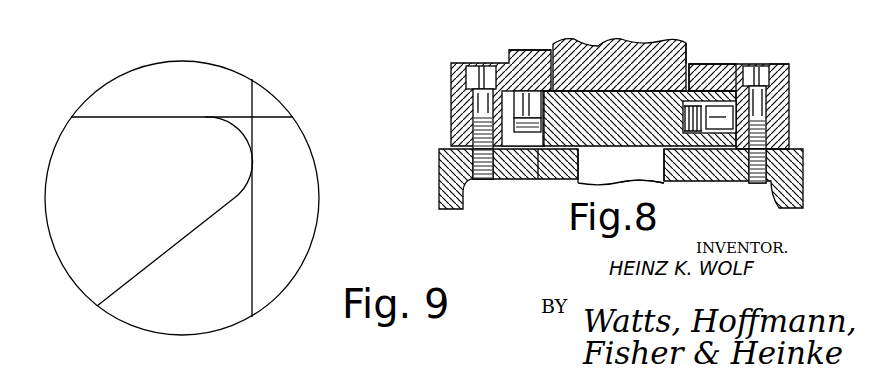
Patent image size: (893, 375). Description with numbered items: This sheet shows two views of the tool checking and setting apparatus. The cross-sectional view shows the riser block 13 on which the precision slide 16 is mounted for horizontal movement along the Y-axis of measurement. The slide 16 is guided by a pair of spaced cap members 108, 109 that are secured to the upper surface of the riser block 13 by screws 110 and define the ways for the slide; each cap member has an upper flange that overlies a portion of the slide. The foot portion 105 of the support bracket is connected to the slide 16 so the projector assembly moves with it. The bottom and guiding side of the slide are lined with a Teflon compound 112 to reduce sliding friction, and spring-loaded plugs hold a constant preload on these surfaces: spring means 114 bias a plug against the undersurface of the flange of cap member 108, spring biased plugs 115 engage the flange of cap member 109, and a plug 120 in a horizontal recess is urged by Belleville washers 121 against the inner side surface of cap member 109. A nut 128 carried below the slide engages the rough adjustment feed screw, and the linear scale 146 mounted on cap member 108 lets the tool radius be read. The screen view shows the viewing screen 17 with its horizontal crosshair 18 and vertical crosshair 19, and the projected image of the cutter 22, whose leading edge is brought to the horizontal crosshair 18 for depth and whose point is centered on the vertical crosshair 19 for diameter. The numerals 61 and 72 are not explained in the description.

In FIG. 8, the riser block 13 is at (431, 160).
In FIG. 8, the precision slide 16 is at (598, 35).
In FIG. 9, the viewing screen 17 is at (227, 74).
In FIG. 9, the horizontal crosshair 18 is at (262, 109).
In FIG. 9, the vertical crosshair 19 is at (244, 275).
In FIG. 9, the cutter 22 is at (88, 247).
In FIG. 8, the member 61 is at (553, 0).
In FIG. 8, the member 72 is at (465, 14).
In FIG. 8, the foot portion 105 is at (678, 56).
In FIG. 8, the cap member 108 is at (443, 75).
In FIG. 8, the cap member 109 is at (781, 99).
In FIG. 8, the screws 110 is at (778, 59).
In FIG. 8, the Teflon compound 112 is at (530, 176).
In FIG. 8, the spring means 114 is at (550, 121).
In FIG. 8, the spring biased plugs 115 is at (521, 42).
In FIG. 8, the plug 120 is at (713, 103).
In FIG. 8, the Belleville washers 121 is at (682, 93).
In FIG. 8, the nut 128 is at (656, 176).
In FIG. 8, the linear scale 146 is at (521, 93).